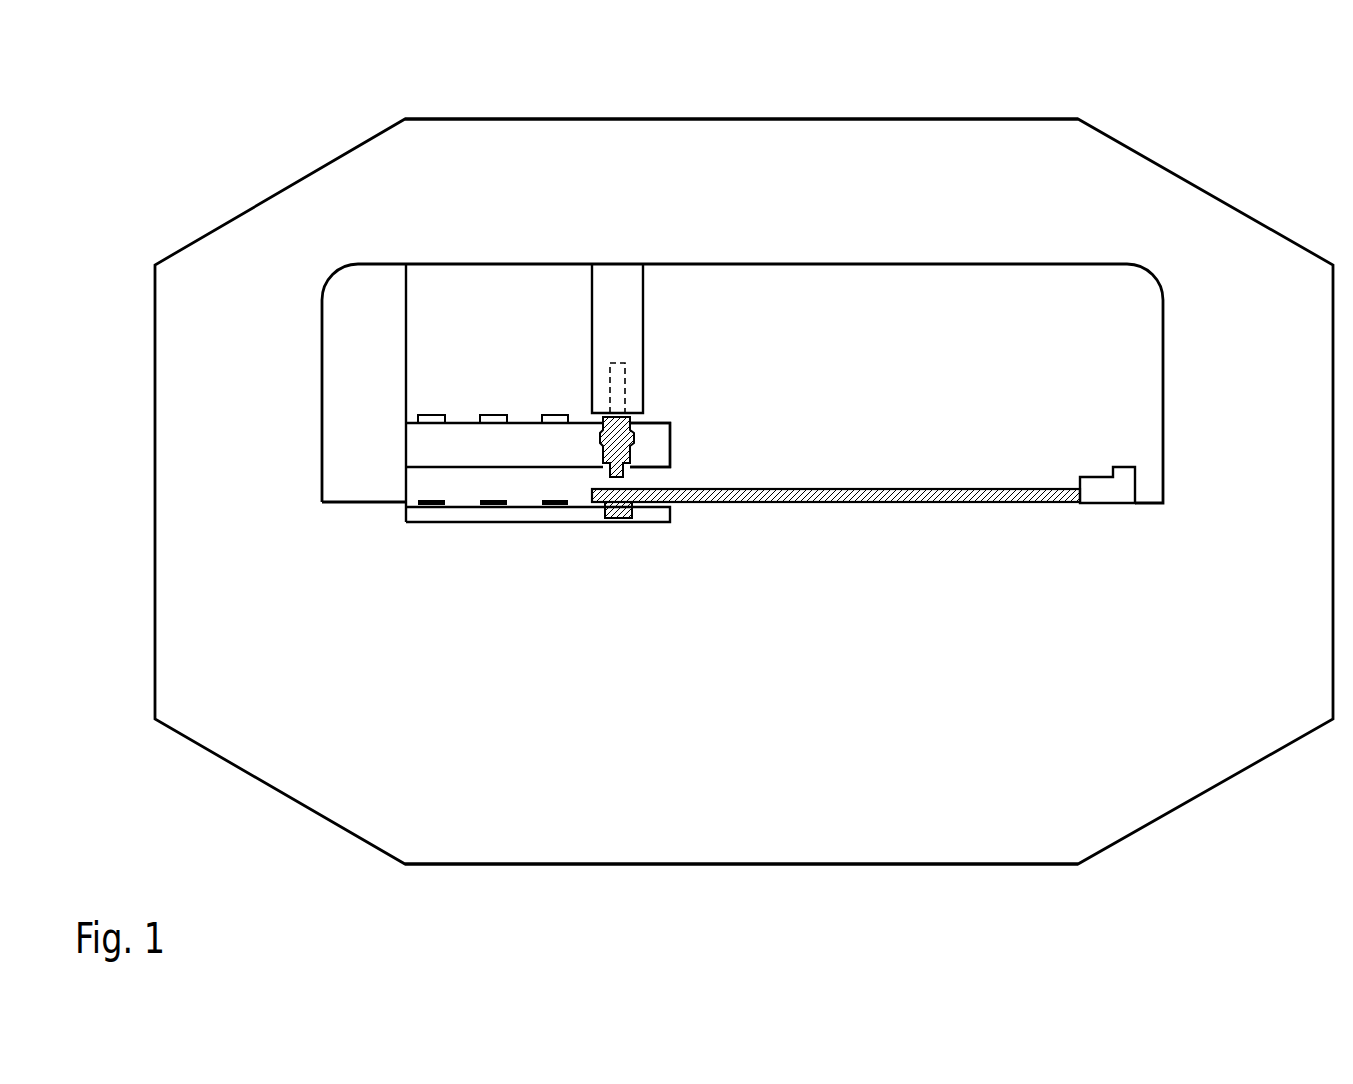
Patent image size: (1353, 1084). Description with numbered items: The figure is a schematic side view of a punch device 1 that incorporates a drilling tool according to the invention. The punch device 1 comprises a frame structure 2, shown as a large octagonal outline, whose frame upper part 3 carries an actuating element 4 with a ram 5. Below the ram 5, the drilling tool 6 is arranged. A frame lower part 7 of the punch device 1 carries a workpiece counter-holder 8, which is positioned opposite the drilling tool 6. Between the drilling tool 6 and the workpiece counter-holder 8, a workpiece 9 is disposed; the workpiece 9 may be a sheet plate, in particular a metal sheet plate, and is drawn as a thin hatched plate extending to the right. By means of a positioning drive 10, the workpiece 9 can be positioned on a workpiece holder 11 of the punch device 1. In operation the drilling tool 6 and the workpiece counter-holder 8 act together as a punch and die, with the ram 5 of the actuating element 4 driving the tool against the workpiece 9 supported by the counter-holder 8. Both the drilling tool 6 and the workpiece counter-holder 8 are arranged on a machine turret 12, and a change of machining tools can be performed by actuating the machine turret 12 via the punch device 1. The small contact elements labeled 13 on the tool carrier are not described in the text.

The punch device 1 is at (147, 120).
The frame structure 2 is at (193, 240).
The frame upper part 3 is at (818, 155).
The actuating element 4 is at (598, 322).
The ram 5 is at (628, 382).
The drilling tool 6 is at (610, 441).
The frame lower part 7 is at (728, 827).
The workpiece counter-holder 8 is at (593, 508).
The workpiece 9 is at (790, 490).
The positioning drive 10 is at (1102, 487).
The workpiece holder 11 is at (933, 490).
The machine turret 12 is at (652, 442).
The contacts 13 is at (418, 417).